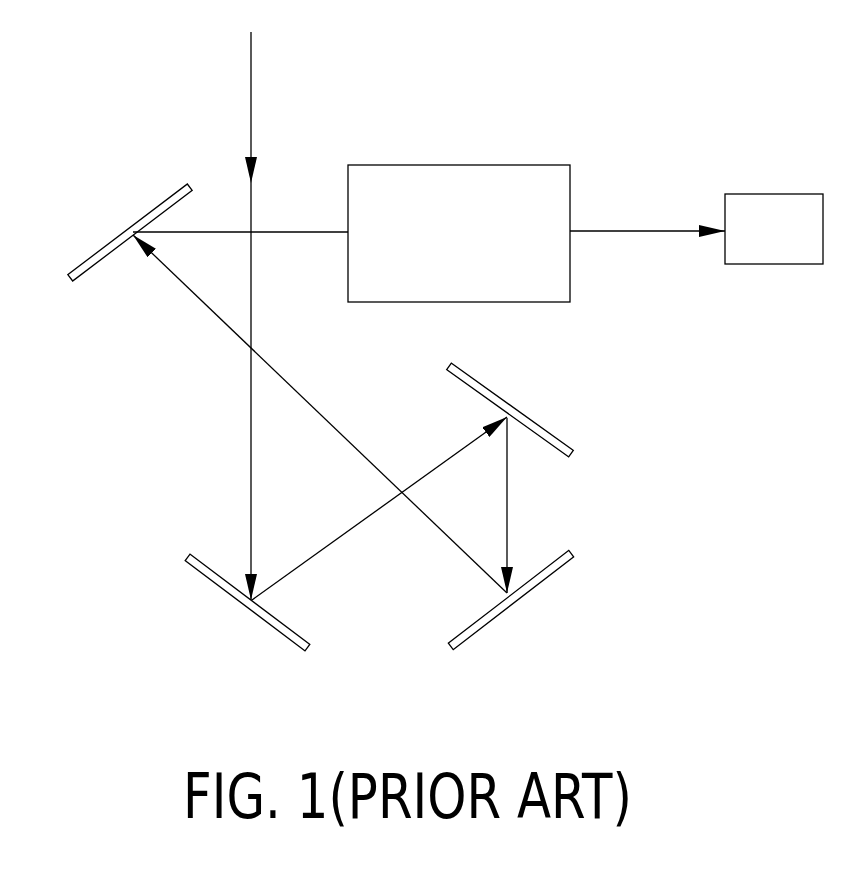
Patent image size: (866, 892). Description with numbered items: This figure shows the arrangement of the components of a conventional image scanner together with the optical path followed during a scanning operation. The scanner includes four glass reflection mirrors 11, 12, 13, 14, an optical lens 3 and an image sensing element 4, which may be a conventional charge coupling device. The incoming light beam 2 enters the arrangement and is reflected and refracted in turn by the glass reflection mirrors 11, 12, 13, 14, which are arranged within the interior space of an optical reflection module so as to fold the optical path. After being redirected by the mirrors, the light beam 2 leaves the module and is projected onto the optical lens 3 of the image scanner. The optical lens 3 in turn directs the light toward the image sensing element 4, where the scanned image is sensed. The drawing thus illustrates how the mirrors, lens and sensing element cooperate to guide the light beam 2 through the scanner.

The light beam 2 is at (250, 95).
The optical lens 3 is at (460, 182).
The image sensing element 4 is at (760, 198).
The glass reflection mirror 11 is at (227, 595).
The glass reflection mirror 12 is at (533, 418).
The glass reflection mirror 13 is at (533, 593).
The glass reflection mirror 14 is at (133, 228).